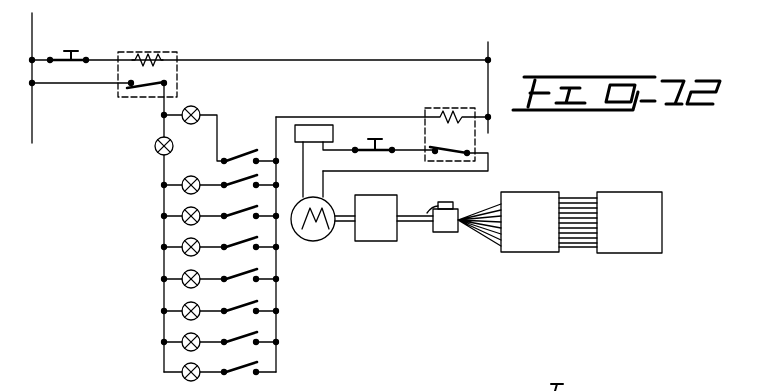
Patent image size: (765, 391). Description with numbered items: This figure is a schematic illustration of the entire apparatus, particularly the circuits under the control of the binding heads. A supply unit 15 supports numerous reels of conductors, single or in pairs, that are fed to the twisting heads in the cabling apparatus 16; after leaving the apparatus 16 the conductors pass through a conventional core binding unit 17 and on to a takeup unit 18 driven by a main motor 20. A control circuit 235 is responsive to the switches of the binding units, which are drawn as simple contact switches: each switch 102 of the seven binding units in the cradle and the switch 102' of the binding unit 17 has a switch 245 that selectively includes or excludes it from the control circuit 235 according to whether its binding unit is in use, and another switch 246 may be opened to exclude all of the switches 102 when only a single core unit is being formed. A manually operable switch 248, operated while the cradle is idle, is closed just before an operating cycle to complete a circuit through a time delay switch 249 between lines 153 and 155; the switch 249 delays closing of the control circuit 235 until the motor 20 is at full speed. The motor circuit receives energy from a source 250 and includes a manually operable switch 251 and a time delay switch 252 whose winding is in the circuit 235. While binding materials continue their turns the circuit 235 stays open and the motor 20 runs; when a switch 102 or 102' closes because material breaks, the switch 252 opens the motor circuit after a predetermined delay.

The line 153 is at (33, 36).
The line 155 is at (489, 52).
The manually operable switch 248 is at (78, 53).
The time delay switch 249 is at (162, 51).
The switch 245 is at (197, 108).
The switch 246 is at (156, 153).
The switch 102 is at (220, 272).
The switch 102' is at (351, 167).
The source 250 is at (321, 124).
The manually operable switch 251 is at (382, 146).
The time delay switch 252 is at (455, 108).
The control circuit 235 is at (419, 106).
The main motor 20 is at (314, 242).
The takeup unit 18 is at (384, 243).
The core binding unit 17 is at (450, 234).
The cabling apparatus 16 is at (541, 191).
The supply unit 15 is at (628, 191).